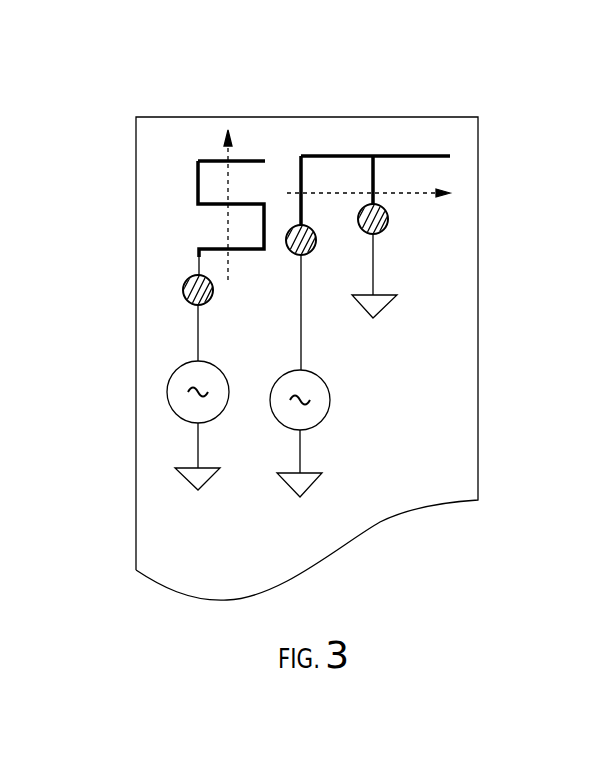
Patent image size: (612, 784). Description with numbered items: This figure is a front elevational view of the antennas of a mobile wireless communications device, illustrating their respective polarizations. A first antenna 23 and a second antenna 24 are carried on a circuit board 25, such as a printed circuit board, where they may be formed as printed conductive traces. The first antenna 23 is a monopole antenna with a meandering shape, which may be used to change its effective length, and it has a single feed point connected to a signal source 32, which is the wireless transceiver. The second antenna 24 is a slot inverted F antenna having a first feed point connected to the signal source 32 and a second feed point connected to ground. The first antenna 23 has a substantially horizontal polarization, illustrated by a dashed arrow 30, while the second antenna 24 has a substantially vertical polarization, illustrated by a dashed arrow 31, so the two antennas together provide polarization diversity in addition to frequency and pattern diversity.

The first antenna 23 is at (197, 177).
The second antenna 24 is at (352, 157).
The circuit board 25 is at (479, 432).
The dashed arrow 30 is at (228, 232).
The dashed arrow 31 is at (293, 193).
The signal source 32 is at (168, 382).